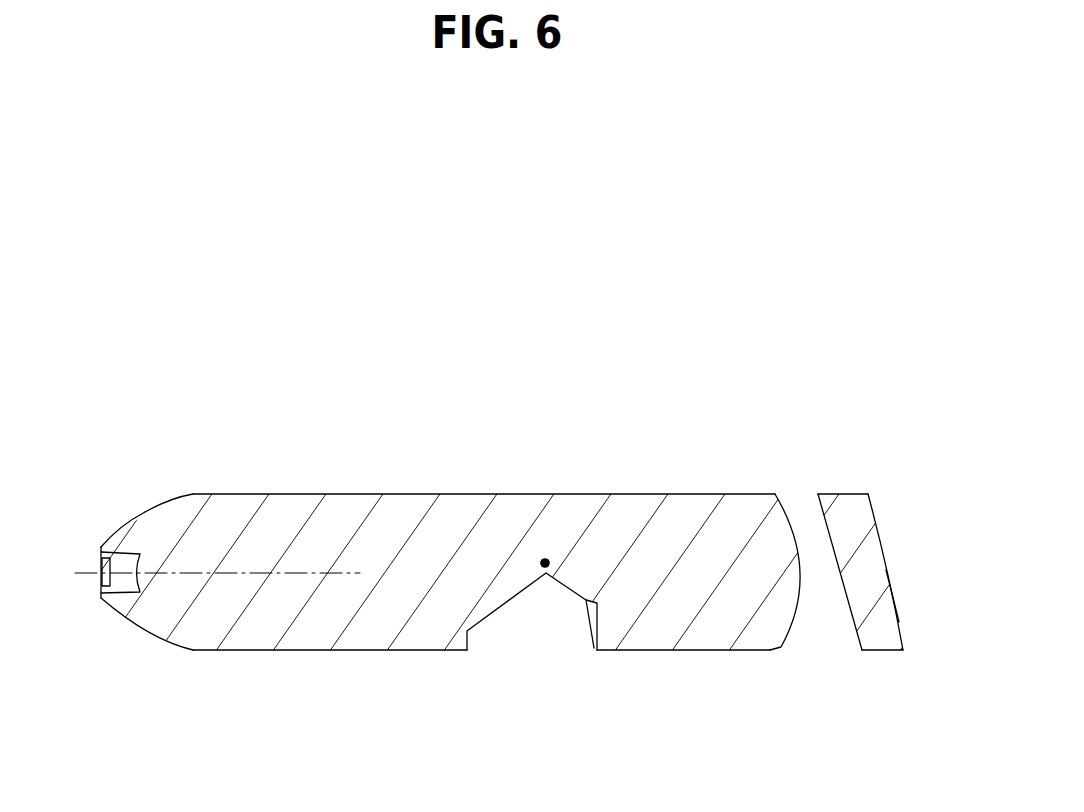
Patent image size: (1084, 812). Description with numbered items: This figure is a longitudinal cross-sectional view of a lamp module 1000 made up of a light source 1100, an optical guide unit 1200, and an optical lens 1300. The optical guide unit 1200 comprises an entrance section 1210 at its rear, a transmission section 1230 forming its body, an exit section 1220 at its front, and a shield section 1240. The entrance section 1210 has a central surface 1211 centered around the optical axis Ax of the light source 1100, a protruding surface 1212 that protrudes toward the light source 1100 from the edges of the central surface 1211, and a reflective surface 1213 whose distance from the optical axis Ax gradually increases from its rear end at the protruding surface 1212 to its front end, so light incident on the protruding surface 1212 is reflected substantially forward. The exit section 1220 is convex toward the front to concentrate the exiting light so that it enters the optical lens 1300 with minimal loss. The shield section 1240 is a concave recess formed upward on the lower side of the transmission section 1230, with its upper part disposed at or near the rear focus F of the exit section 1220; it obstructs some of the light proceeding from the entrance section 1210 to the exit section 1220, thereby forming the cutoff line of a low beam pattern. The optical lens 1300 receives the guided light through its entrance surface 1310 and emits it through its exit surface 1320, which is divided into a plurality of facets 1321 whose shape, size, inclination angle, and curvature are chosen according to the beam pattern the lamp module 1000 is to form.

The lamp module 1000 is at (572, 301).
The light source 1100 is at (100, 582).
The optical guide unit 1200 is at (419, 471).
The entrance section 1210 is at (57, 406).
The central surface 1211 is at (100, 567).
The protruding surface 1212 is at (103, 554).
The reflective surface 1213 is at (146, 515).
The exit section 1220 is at (787, 631).
The transmission section 1230 is at (294, 520).
The shield section 1240 is at (546, 596).
The optical lens 1300 is at (848, 511).
The entrance surface 1310 is at (811, 508).
The exit surface 1320 is at (881, 485).
The facets 1321 is at (892, 577).
The rear focus F is at (545, 557).
The optical axis Ax is at (201, 573).